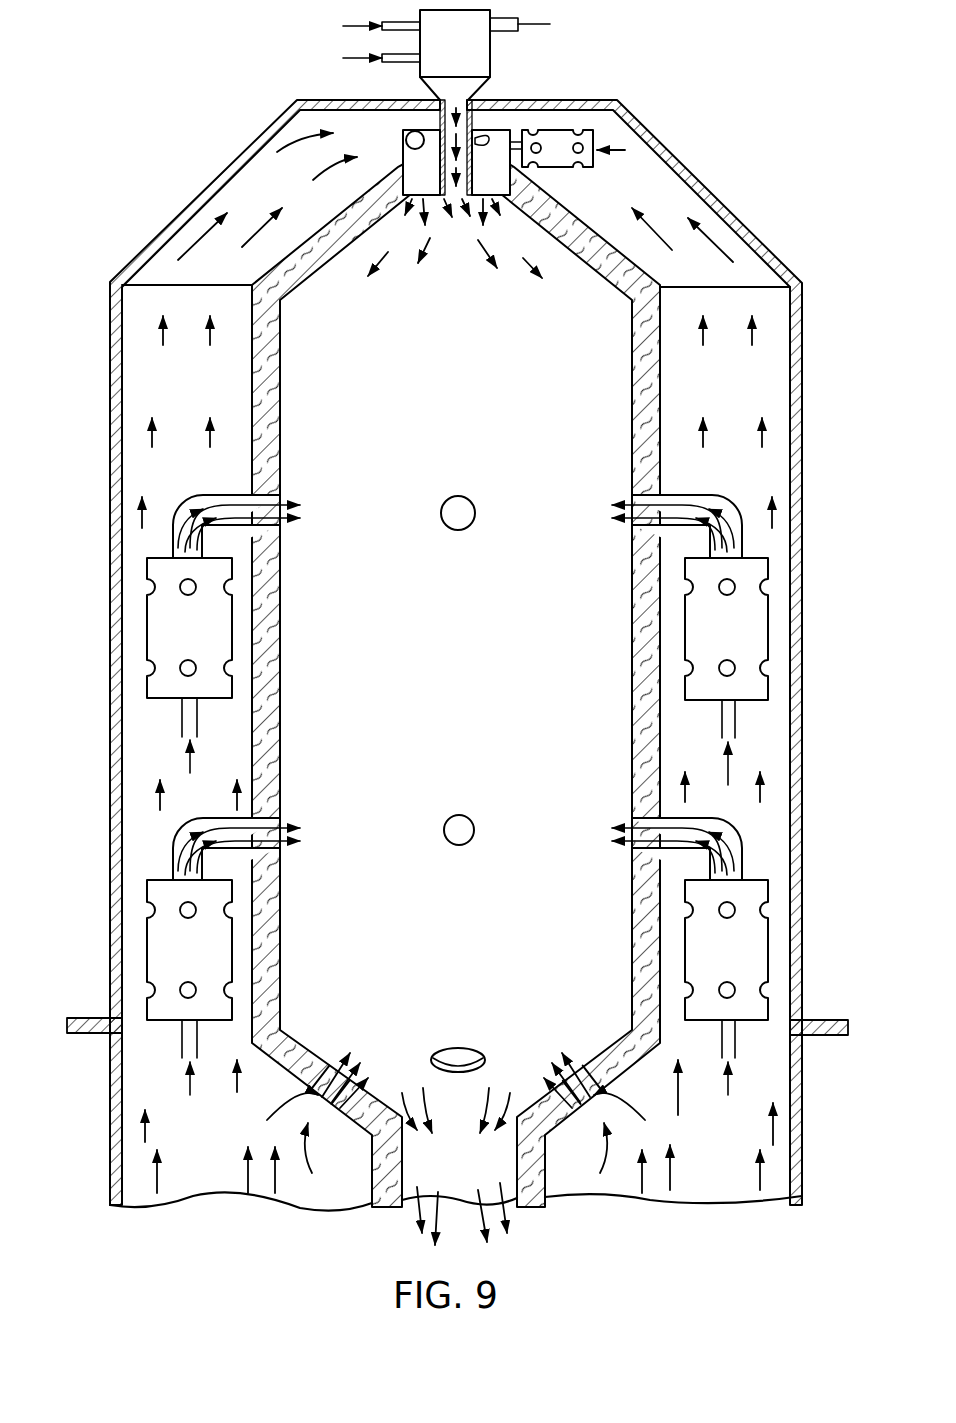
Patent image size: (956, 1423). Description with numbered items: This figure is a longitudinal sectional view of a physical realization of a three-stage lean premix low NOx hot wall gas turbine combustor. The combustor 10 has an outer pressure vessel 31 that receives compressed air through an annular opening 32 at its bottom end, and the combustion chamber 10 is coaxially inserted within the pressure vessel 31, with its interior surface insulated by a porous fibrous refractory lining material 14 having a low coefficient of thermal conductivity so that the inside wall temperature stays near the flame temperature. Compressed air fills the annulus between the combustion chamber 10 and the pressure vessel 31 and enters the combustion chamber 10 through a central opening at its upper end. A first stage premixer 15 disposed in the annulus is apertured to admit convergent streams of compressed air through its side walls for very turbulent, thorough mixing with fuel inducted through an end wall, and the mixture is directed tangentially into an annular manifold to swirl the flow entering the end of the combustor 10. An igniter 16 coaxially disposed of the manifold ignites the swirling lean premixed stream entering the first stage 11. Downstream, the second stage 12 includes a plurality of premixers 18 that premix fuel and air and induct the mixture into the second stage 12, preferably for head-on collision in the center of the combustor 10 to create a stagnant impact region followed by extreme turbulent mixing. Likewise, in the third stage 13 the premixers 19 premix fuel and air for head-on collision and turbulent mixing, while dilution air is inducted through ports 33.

The combustor 10 is at (520, 438).
The first stage 11 is at (409, 200).
The second stage 12 is at (409, 490).
The third stage 13 is at (409, 784).
The porous fibrous refractory lining material 14 is at (606, 287).
The first stage premixer 15 is at (403, 168).
The igniter 16 is at (484, 62).
The premixers 18 is at (173, 625).
The premixers 19 is at (175, 955).
The outer pressure vessel 31 is at (110, 553).
The annular opening 32 is at (368, 1217).
The ports 33 is at (335, 1062).